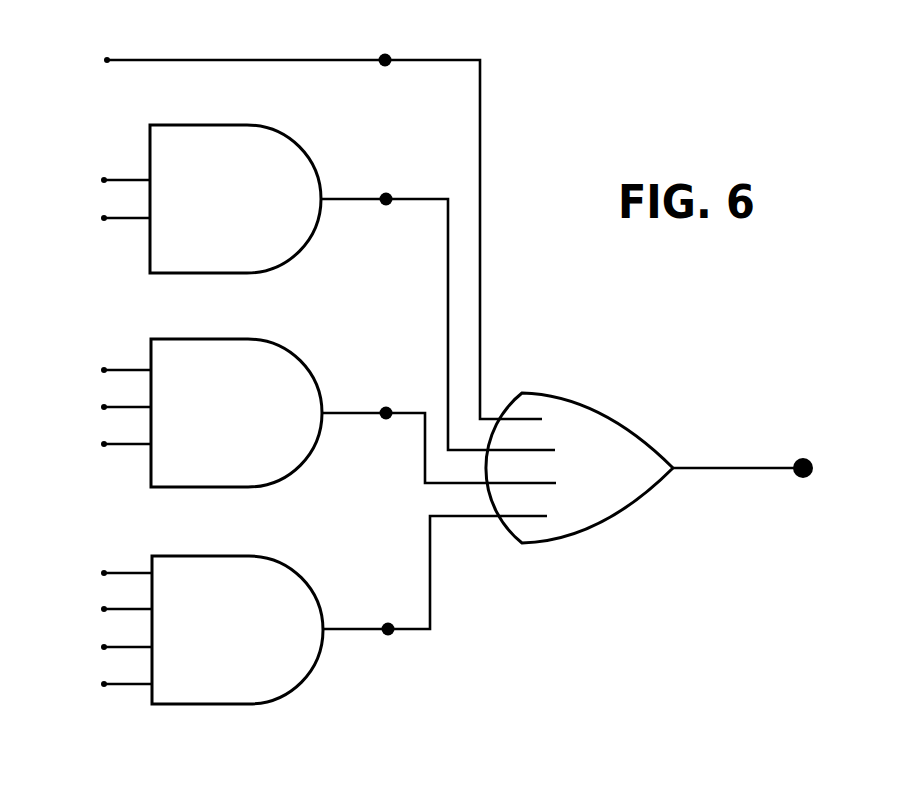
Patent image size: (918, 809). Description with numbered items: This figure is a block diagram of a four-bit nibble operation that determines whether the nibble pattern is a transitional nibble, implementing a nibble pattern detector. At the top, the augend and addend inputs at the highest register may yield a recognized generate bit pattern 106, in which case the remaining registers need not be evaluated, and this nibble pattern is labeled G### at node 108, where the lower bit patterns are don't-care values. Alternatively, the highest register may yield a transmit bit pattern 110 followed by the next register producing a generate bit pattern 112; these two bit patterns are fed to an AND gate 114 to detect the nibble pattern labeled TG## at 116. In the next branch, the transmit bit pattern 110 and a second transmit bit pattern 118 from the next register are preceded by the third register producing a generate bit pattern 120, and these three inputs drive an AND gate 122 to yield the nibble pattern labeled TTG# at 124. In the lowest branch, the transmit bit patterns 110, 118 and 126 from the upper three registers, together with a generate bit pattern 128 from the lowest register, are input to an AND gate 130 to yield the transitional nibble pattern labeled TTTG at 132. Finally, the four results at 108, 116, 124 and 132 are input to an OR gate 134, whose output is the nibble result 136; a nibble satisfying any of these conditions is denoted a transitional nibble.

The G3 bit pattern 106 is at (102, 58).
The G### nibble pattern 108 is at (389, 53).
The T3 bit pattern 110 is at (102, 179).
The G2 bit pattern 112 is at (102, 217).
The AND gate 114 is at (310, 162).
The TG## nibble pattern 116 is at (385, 206).
The T2 bit pattern 118 is at (102, 406).
The G1 bit pattern 120 is at (102, 443).
The AND gate 122 is at (309, 378).
The TTG# nibble pattern 124 is at (388, 420).
The T1 bit pattern 126 is at (102, 646).
The G0 bit pattern 128 is at (102, 683).
The AND gate 130 is at (311, 595).
The TTTG nibble pattern 132 is at (388, 636).
The OR gate 134 is at (607, 416).
The nibble result 136 is at (810, 458).